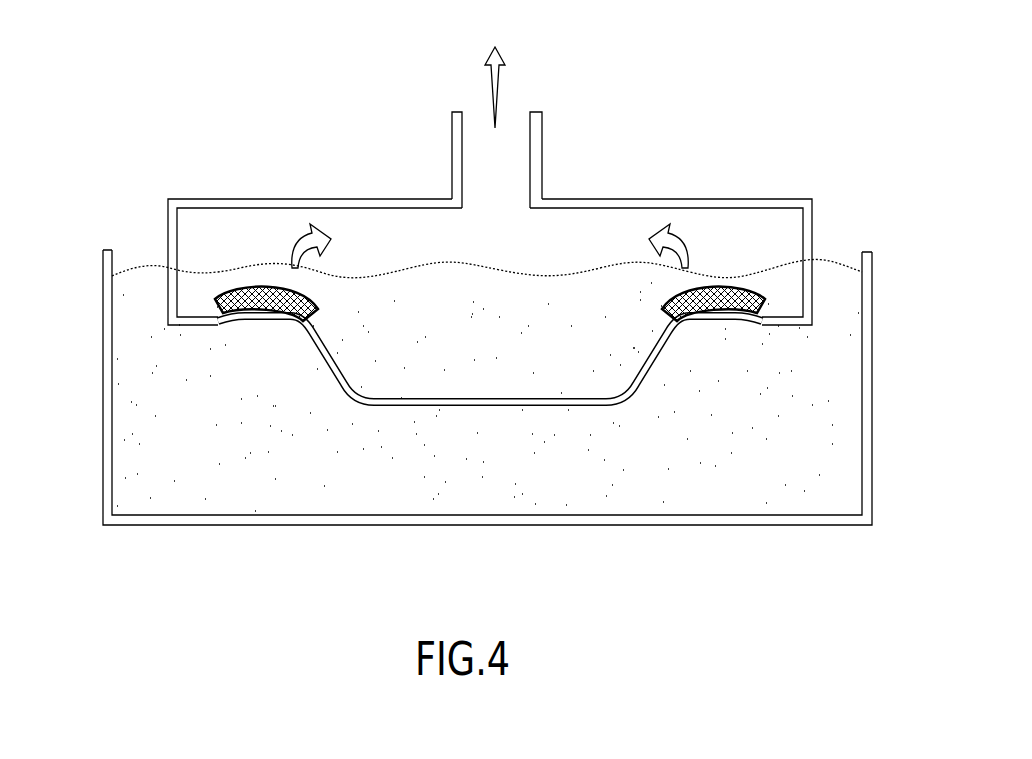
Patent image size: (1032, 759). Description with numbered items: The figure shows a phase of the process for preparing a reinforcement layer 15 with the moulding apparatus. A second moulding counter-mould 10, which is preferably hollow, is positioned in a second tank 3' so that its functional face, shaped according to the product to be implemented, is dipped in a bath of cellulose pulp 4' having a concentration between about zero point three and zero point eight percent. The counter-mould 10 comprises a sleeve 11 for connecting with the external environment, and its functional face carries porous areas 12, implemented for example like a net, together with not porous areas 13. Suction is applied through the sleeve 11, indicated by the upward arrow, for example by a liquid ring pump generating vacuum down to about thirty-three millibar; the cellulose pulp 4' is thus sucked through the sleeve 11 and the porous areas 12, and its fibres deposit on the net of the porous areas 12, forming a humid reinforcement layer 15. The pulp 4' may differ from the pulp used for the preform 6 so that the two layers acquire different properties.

The second tank 3' is at (452, 387).
The bath of cellulose pulp 4' is at (487, 385).
The preform 6 is at (247, 330).
The second moulding counter-mould 10 is at (225, 197).
The sleeve 11 is at (542, 150).
The porous areas 12 is at (232, 328).
The not porous areas 13 is at (470, 405).
The reinforcement layer 15 is at (272, 320).